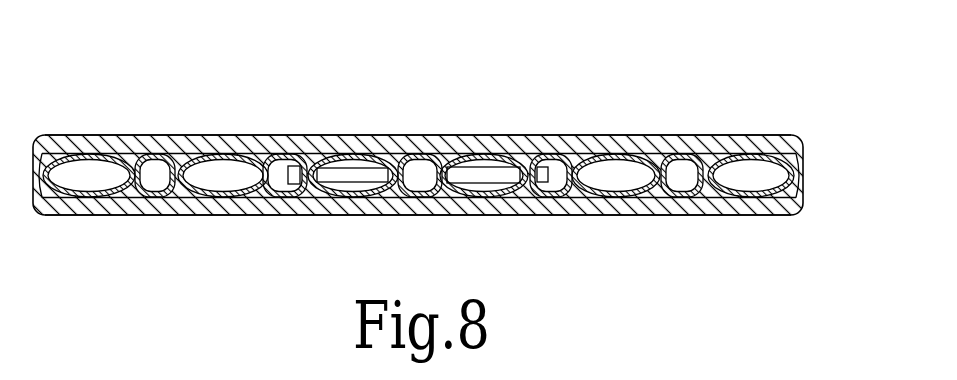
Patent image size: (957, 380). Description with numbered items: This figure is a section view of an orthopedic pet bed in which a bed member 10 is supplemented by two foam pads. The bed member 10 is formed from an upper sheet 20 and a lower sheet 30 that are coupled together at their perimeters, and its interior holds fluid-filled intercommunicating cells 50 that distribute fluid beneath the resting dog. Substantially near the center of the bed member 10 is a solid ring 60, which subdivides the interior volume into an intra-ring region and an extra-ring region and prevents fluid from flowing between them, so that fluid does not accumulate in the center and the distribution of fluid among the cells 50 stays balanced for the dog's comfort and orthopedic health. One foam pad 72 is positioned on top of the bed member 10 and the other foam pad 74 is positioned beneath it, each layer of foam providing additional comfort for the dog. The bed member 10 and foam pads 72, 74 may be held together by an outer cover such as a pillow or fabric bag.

The bed member 10 is at (781, 247).
The upper sheet 20 is at (215, 153).
The lower sheet 30 is at (76, 200).
The cells 50 is at (155, 178).
The solid ring 60 is at (337, 173).
The foam pad 72 is at (417, 135).
The foam pad 74 is at (613, 215).